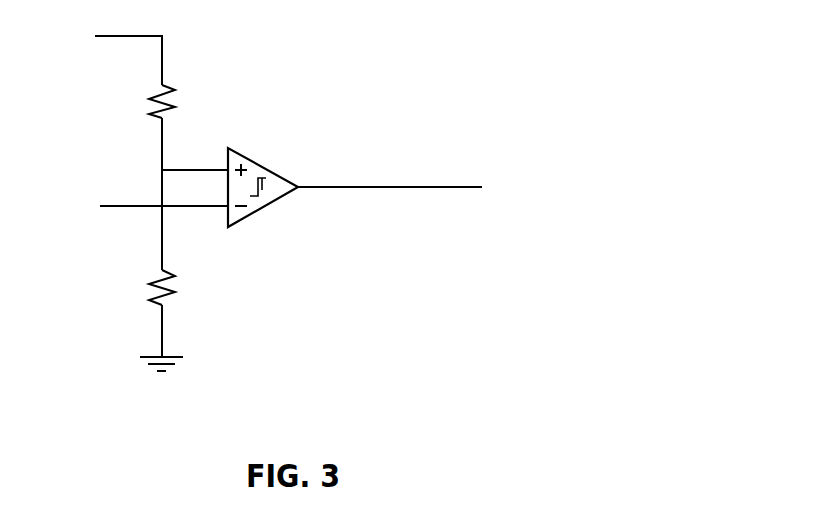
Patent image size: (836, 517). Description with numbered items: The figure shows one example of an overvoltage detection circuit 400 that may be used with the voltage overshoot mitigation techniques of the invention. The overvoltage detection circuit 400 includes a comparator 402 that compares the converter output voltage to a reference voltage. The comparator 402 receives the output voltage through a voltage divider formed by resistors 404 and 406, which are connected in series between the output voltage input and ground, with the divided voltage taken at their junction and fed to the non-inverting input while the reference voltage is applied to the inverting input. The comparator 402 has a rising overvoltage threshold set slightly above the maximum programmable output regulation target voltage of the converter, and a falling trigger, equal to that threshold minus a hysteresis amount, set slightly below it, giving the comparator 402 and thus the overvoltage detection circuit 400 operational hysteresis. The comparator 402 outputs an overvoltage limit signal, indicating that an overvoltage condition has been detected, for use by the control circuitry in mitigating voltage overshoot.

The overvoltage detection circuit 400 is at (413, 78).
The comparator 402 is at (272, 163).
The resistor 404 is at (178, 86).
The resistor 406 is at (156, 278).